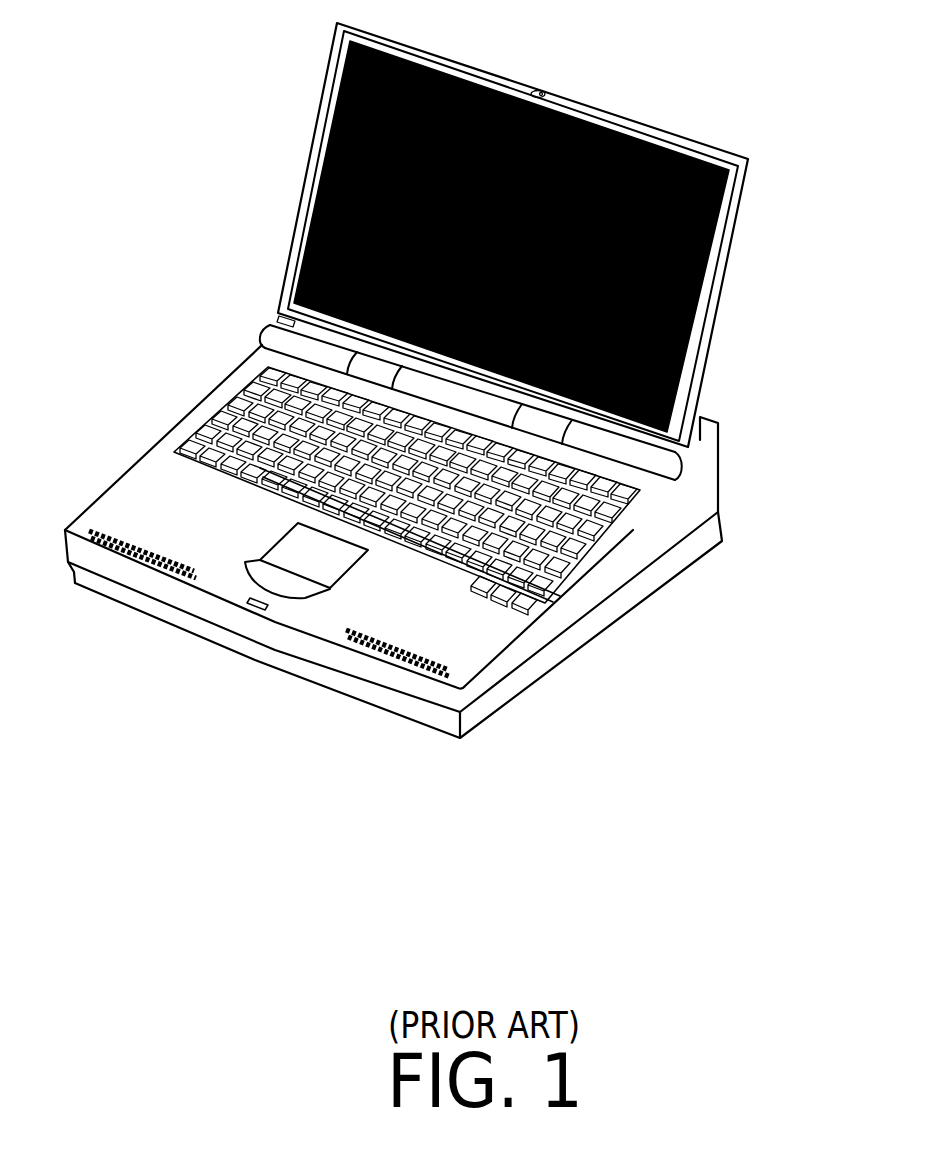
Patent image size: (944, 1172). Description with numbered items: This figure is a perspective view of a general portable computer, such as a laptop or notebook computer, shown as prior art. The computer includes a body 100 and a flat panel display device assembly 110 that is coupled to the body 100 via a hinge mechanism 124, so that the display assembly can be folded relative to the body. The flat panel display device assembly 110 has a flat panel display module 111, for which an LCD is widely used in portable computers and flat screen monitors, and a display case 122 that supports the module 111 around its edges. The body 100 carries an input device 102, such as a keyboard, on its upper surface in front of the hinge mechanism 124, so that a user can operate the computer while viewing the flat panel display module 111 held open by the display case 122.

The body 100 is at (565, 672).
The input device 102 is at (633, 530).
The flat panel display device assembly 110 is at (778, 216).
The flat panel display module 111 is at (333, 168).
The display case 122 is at (718, 305).
The hinge mechanism 124 is at (350, 367).